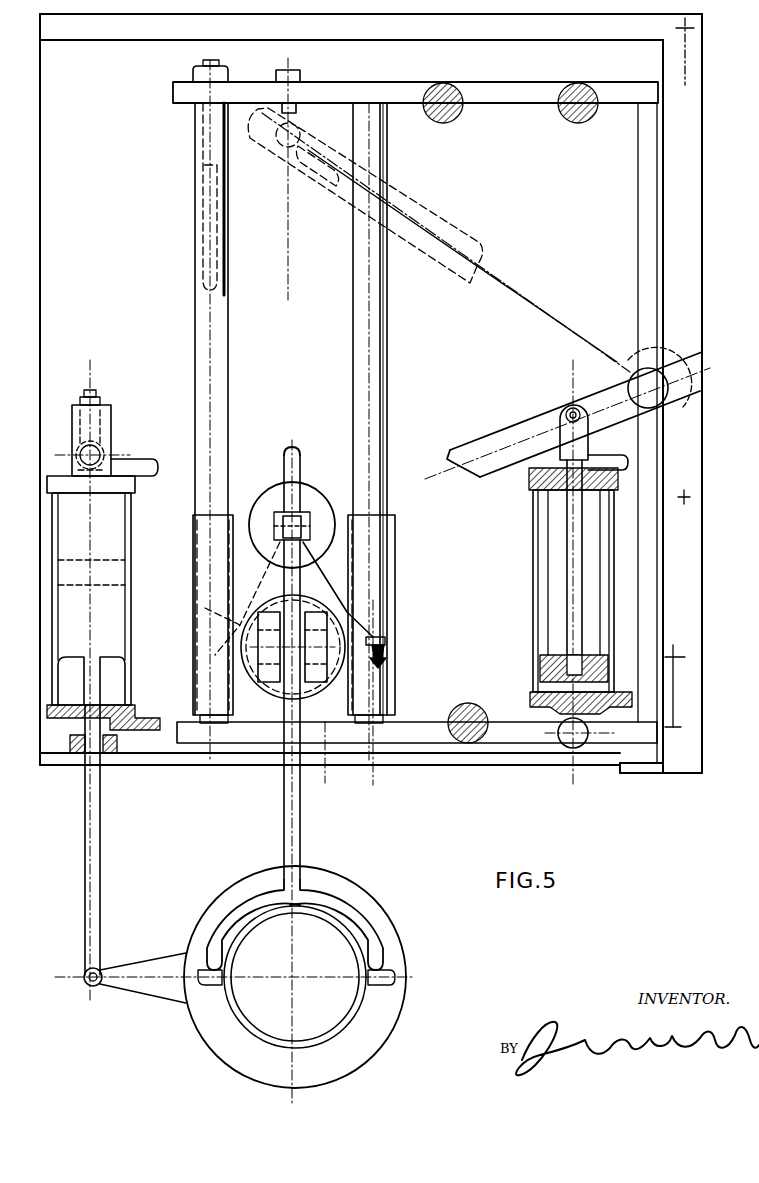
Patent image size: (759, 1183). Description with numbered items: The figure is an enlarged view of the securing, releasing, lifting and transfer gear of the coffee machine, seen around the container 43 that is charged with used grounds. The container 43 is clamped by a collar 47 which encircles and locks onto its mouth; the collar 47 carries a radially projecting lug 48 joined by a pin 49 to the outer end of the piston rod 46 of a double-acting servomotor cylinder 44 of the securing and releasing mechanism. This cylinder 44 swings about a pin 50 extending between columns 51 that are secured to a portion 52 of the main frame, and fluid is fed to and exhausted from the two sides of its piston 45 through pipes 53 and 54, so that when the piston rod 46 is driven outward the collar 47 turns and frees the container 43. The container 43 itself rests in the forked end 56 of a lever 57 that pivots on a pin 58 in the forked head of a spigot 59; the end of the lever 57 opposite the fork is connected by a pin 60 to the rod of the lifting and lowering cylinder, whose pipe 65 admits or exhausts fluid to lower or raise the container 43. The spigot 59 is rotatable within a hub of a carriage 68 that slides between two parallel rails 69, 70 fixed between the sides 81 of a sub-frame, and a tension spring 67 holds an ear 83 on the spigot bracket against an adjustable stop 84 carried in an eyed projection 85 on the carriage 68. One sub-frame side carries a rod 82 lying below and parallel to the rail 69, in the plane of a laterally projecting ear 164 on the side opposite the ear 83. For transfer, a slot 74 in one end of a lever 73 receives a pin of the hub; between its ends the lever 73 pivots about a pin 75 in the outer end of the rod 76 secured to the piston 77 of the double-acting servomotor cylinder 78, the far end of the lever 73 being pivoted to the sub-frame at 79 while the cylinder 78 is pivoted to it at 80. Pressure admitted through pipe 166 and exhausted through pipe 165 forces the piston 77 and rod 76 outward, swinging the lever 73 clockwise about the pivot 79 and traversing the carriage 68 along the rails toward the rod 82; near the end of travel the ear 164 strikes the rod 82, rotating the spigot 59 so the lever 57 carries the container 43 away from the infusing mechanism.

The container 43 is at (346, 936).
The double-acting servomotor cylinder 44 is at (118, 548).
The piston 45 is at (120, 575).
The piston rod 46 is at (104, 811).
The collar 47 is at (223, 1055).
The radially projecting lug 48 is at (154, 990).
The pin 49 is at (100, 970).
The pin 50 is at (80, 433).
The columns 51 is at (101, 521).
The portion of the main frame 52 is at (648, 298).
The pipe 53 is at (128, 464).
The pipe 54 is at (147, 718).
The forked end 56 is at (323, 882).
The lever 57 is at (288, 818).
The pin 58 is at (417, 761).
The spigot 59 is at (270, 673).
The pin 60 is at (306, 527).
The pipe 65 is at (299, 468).
The tension spring 67 is at (366, 637).
The carriage 68 is at (208, 530).
The rail 69 is at (200, 327).
The rail 70 is at (384, 341).
The lever 73 is at (505, 432).
The slot 74 is at (318, 145).
The pin 75 is at (582, 438).
The rod 76 is at (576, 548).
The piston 77 is at (552, 665).
The double-acting servomotor cylinder 78 is at (533, 588).
The pivot 79 is at (660, 372).
The pivot 80 is at (580, 748).
The sides of sub-frame 81 is at (505, 93).
The rod 82 is at (210, 222).
The ear 83 is at (380, 638).
The adjustable stop 84 is at (386, 658).
The eyed projection 85 is at (382, 648).
The laterally projecting ear 164 is at (243, 613).
The pipe 165 is at (630, 462).
The pipe 166 is at (630, 710).